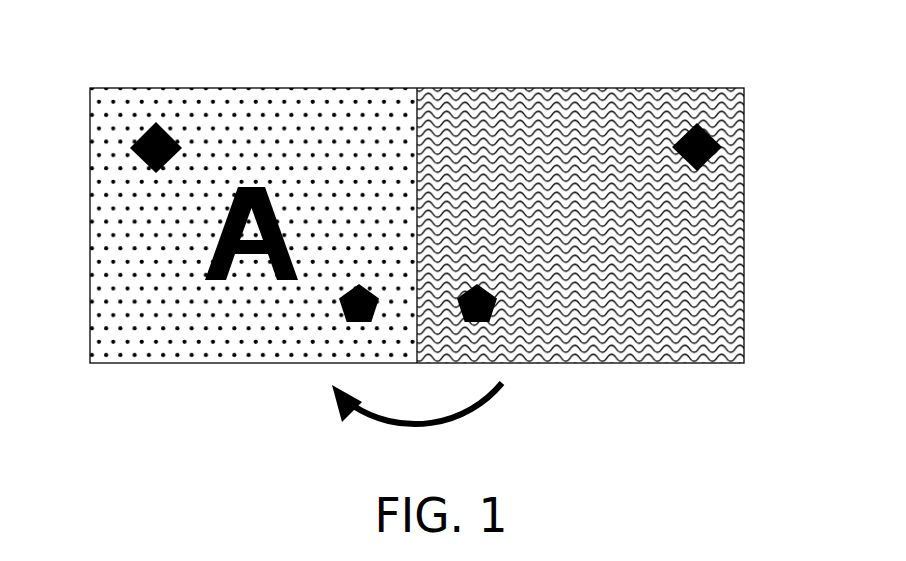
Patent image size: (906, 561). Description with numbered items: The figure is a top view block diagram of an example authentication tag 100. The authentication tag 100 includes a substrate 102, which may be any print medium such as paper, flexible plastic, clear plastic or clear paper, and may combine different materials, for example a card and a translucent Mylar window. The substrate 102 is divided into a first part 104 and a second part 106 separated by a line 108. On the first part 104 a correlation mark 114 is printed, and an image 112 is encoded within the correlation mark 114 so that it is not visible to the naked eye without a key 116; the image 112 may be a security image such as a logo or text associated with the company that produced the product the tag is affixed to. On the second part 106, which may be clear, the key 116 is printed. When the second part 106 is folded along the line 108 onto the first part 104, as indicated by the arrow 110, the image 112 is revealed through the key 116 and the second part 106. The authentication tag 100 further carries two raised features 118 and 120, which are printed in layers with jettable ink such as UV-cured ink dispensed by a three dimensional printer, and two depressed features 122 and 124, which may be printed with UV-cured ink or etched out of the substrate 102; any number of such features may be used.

The authentication tag 100 is at (612, 30).
The substrate 102 is at (744, 212).
The first part 104 is at (224, 220).
The second part 106 is at (610, 218).
The line 108 is at (418, 88).
The arrow 110 is at (427, 428).
The image 112 is at (220, 292).
The correlation mark 114 is at (107, 322).
The key 116 is at (715, 106).
The raised feature 118 is at (155, 122).
The raised feature 120 is at (340, 313).
The depressed feature 122 is at (717, 142).
The depressed feature 124 is at (493, 318).